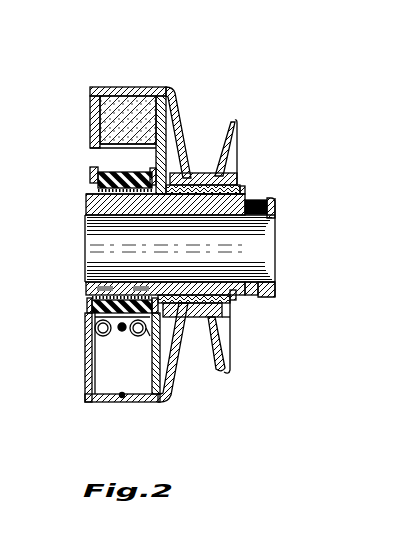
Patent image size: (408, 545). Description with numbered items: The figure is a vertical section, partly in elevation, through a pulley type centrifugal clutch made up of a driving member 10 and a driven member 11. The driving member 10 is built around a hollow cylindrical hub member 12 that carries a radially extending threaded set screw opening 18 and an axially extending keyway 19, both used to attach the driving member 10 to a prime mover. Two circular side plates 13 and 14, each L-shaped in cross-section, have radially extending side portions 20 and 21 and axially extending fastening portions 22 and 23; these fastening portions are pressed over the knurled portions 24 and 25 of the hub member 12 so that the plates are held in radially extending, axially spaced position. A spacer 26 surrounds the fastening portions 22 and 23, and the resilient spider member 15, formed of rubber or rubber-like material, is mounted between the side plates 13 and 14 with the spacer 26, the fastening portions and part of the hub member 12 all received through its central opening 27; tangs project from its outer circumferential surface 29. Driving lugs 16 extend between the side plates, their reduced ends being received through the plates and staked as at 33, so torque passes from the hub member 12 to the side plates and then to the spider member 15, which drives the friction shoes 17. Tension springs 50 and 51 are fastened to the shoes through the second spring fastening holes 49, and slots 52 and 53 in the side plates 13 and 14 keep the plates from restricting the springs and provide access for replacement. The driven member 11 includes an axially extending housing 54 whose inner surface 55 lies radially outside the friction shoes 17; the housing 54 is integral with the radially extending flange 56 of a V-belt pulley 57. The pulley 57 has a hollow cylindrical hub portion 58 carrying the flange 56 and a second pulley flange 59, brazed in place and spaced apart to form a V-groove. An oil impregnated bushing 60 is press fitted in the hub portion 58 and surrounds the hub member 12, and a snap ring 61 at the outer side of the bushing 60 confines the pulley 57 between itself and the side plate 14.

The driving member 10 is at (90, 128).
The driven member 11 is at (165, 87).
The hub member 12 is at (265, 247).
The side plate 13 is at (87, 398).
The side plate 14 is at (166, 110).
The resilient spider member 15 is at (92, 172).
The driving lugs 16 is at (98, 160).
The friction shoes 17 is at (128, 87).
The set screw opening 18 is at (258, 206).
The keyway 19 is at (250, 283).
The radially extending side portion 20 is at (94, 108).
The radially extending side portion 21 is at (163, 127).
The axially extending fastening portion 22 is at (94, 190).
The axially extending fastening portion 23 is at (143, 193).
The knurled portion 24 is at (93, 285).
The knurled portion 25 is at (128, 296).
The spacer 26 is at (90, 218).
The opening 27 is at (90, 300).
The outer circumferential surface 29 is at (96, 327).
The staked end portions 33 is at (90, 146).
The second spring fastening holes 49 is at (122, 332).
The tension spring 50 is at (90, 362).
The tension spring 51 is at (150, 336).
The slot 52 is at (97, 337).
The slot 53 is at (146, 320).
The housing 54 is at (92, 405).
The inner surface 55 is at (120, 403).
The flange 56 is at (177, 362).
The V-belt pulley 57 is at (235, 350).
The hub portion 58 is at (225, 308).
The second pulley flange 59 is at (222, 340).
The bushing 60 is at (244, 196).
The snap ring 61 is at (238, 298).